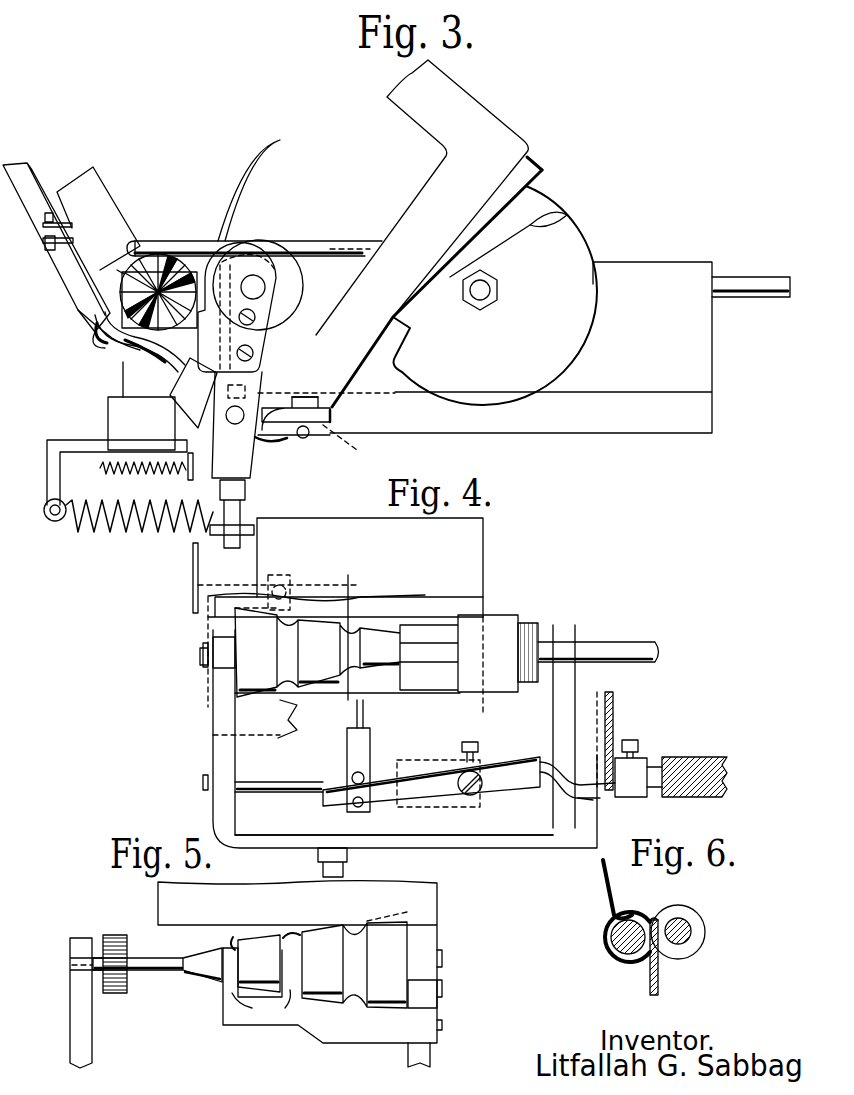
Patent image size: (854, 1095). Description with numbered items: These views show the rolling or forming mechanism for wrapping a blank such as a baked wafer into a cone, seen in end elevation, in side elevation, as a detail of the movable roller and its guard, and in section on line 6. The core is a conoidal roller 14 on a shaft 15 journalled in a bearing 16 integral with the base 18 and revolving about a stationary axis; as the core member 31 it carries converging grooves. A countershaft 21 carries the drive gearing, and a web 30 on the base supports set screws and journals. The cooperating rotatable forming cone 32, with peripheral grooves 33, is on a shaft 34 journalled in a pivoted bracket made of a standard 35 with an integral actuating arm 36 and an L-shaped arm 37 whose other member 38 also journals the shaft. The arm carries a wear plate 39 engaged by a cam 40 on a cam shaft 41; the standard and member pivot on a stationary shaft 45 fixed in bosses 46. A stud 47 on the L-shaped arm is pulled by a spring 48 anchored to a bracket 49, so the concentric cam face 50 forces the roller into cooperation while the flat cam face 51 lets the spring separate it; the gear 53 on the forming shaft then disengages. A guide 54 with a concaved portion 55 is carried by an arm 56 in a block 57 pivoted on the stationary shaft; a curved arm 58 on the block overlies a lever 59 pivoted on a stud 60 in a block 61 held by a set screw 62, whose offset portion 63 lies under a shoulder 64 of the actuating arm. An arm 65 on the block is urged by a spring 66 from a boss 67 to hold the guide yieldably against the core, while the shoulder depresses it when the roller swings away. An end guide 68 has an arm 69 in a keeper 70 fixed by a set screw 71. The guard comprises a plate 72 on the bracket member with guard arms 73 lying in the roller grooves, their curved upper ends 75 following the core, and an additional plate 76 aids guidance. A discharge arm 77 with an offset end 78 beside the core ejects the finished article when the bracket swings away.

In FIG. 4, the section line 6 is at (338, 705).
In FIG. 4, the conoidal roller 14 is at (507, 622).
In FIG. 4, the shaft 15 is at (648, 642).
In FIG. 3, the bearing 16 is at (117, 270).
In FIG. 3, the base 18 is at (366, 425).
In FIG. 4, the base 18 is at (710, 757).
In FIG. 3, the countershaft 21 is at (744, 278).
In FIG. 3, the web 30 is at (698, 352).
In FIG. 3, the core member 31 is at (175, 277).
In FIG. 6, the core member 31 is at (616, 931).
In FIG. 3, the rotatable forming cone 32 is at (298, 285).
In FIG. 5, the rotatable forming cone 32 is at (387, 932).
In FIG. 6, the rotatable forming cone 32 is at (693, 925).
In FIG. 5, the peripheral grooves 33 is at (297, 947).
In FIG. 3, the shaft 34 is at (259, 278).
In FIG. 4, the shaft 34 is at (578, 647).
In FIG. 5, the shaft 34 is at (161, 970).
In FIG. 4, the standard 35 is at (557, 703).
In FIG. 3, the actuating arm 36 is at (430, 204).
In FIG. 4, the actuating arm 36 is at (613, 708).
In FIG. 4, the L-shaped arm 37 is at (500, 842).
In FIG. 3, the bracket member 38 is at (252, 374).
In FIG. 4, the bracket member 38 is at (215, 757).
In FIG. 5, the bracket member 38 is at (430, 1047).
In FIG. 3, the wear plate 39 is at (530, 177).
In FIG. 3, the cam 40 is at (581, 258).
In FIG. 3, the cam shaft 41 is at (486, 296).
In FIG. 3, the stationary shaft 45 is at (240, 422).
In FIG. 4, the stationary shaft 45 is at (298, 778).
In FIG. 4, the bosses 46 is at (642, 762).
In FIG. 3, the stud 47 is at (228, 505).
In FIG. 4, the stud 47 is at (338, 863).
In FIG. 3, the spring 48 is at (148, 517).
In FIG. 3, the bracket 49 is at (72, 440).
In FIG. 3, the concentric cam face 50 is at (596, 328).
In FIG. 3, the flat cam face 51 is at (567, 220).
In FIG. 4, the gear 53 is at (538, 666).
In FIG. 5, the gear 53 is at (126, 950).
In FIG. 3, the guide 54 is at (83, 282).
In FIG. 4, the guide 54 is at (474, 548).
In FIG. 6, the guide 54 is at (604, 875).
In FIG. 3, the concaved portion 55 is at (92, 334).
In FIG. 6, the concaved portion 55 is at (604, 946).
In FIG. 3, the arm 56 is at (128, 354).
In FIG. 4, the arm 56 is at (363, 713).
In FIG. 3, the block 57 is at (172, 388).
In FIG. 4, the block 57 is at (362, 742).
In FIG. 3, the curved arm 58 is at (320, 410).
In FIG. 4, the curved arm 58 is at (353, 773).
In FIG. 3, the lever 59 is at (303, 438).
In FIG. 4, the lever 59 is at (386, 793).
In FIG. 4, the stud 60 is at (475, 792).
In FIG. 3, the block 61 is at (278, 402).
In FIG. 4, the block 61 is at (460, 762).
In FIG. 3, the set screw 62 is at (273, 385).
In FIG. 4, the set screw 62 is at (471, 743).
In FIG. 4, the offset portion 63 is at (582, 800).
In FIG. 3, the shoulder 64 is at (350, 447).
In FIG. 4, the shoulder 64 is at (590, 770).
In FIG. 3, the arm 65 is at (185, 456).
In FIG. 3, the spring 66 is at (139, 479).
In FIG. 3, the boss 67 is at (88, 465).
In FIG. 3, the end guide 68 is at (110, 210).
In FIG. 4, the end guide 68 is at (193, 570).
In FIG. 3, the arm 69 is at (68, 228).
In FIG. 4, the arm 69 is at (225, 590).
In FIG. 3, the keeper 70 is at (57, 244).
In FIG. 3, the set screw 71 is at (43, 240).
In FIG. 4, the guard plate 72 is at (282, 727).
In FIG. 5, the guard plate 72 is at (365, 1032).
In FIG. 5, the guard arms 73 is at (245, 1000).
In FIG. 6, the guard arms 73 is at (656, 961).
In FIG. 5, the curved upper ends 75 is at (285, 948).
In FIG. 6, the curved upper ends 75 is at (658, 917).
In FIG. 3, the plate 76 is at (250, 188).
In FIG. 4, the plate 76 is at (472, 605).
In FIG. 5, the plate 76 is at (165, 898).
In FIG. 3, the discharge arm 77 is at (350, 251).
In FIG. 3, the offset end 78 is at (147, 240).